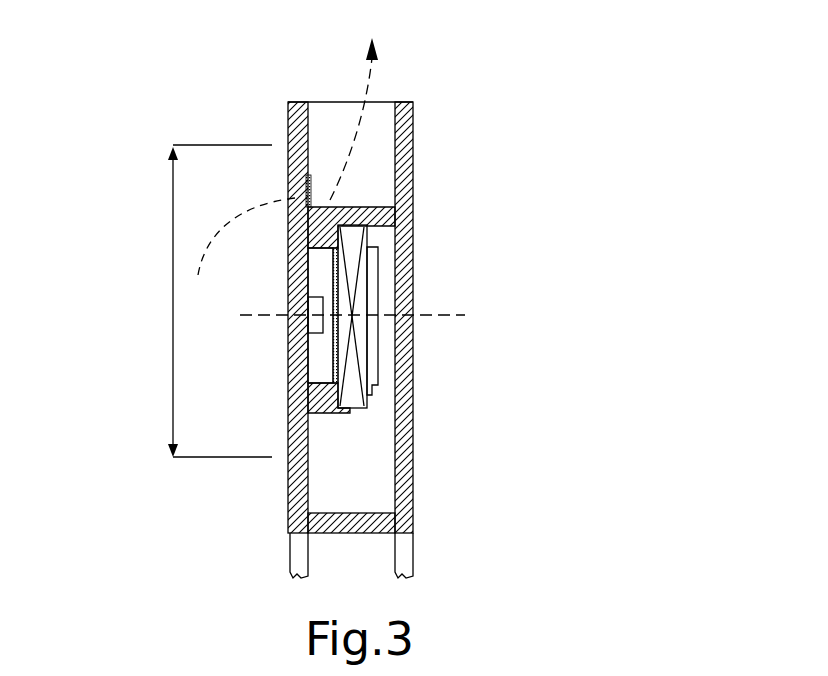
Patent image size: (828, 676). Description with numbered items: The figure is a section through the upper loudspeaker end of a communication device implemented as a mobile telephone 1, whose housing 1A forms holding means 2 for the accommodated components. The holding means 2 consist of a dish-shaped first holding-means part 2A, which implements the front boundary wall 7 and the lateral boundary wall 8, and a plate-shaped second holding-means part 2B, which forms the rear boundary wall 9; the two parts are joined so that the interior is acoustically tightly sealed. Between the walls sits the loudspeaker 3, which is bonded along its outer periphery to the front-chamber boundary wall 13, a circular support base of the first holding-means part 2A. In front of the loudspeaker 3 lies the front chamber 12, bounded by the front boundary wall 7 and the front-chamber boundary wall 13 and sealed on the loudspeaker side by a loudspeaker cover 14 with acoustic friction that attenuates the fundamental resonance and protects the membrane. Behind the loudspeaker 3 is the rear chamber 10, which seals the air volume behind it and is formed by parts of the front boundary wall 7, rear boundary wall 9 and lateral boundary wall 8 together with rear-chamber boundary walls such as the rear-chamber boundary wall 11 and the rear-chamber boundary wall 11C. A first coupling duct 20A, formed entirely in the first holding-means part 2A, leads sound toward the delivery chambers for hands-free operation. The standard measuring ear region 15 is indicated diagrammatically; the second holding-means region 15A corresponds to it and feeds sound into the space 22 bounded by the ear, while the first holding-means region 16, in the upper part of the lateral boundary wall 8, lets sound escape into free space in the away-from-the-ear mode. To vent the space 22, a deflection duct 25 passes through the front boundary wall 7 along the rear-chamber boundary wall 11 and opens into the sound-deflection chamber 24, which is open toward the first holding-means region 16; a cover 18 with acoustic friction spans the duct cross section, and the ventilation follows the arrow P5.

The mobile telephone 1 is at (665, 121).
The housing 1A is at (414, 503).
The holding means 2 is at (500, 291).
The first holding-means part 2A is at (196, 130).
The second holding-means part 2B is at (478, 126).
The loudspeaker 3 is at (365, 300).
The front boundary wall 7 is at (288, 507).
The lateral boundary wall 8 is at (358, 430).
The rear boundary wall 9 is at (416, 204).
The rear chamber 10 is at (366, 442).
The rear-chamber boundary wall 11 is at (382, 220).
The rear-chamber boundary wall 11C is at (365, 513).
The front chamber 12 is at (305, 268).
The front-chamber boundary wall 13 is at (292, 222).
The loudspeaker cover 14 is at (308, 356).
The standard measuring ear region 15 is at (173, 318).
The second holding-means region 15A is at (198, 278).
The first holding-means region 16 is at (250, 92).
The cover 18 is at (316, 186).
The first coupling duct 20A is at (316, 320).
The space bounded by the ear 22 is at (146, 232).
The sound-deflection chamber 24 is at (329, 116).
The deflection duct 25 is at (292, 192).
The arrow P5 is at (372, 88).